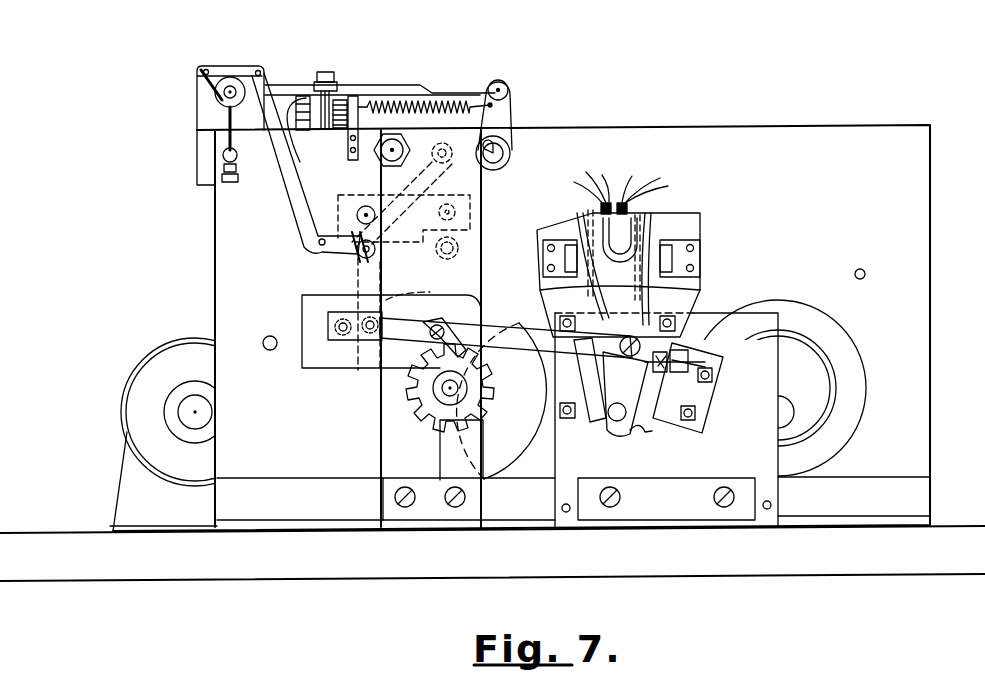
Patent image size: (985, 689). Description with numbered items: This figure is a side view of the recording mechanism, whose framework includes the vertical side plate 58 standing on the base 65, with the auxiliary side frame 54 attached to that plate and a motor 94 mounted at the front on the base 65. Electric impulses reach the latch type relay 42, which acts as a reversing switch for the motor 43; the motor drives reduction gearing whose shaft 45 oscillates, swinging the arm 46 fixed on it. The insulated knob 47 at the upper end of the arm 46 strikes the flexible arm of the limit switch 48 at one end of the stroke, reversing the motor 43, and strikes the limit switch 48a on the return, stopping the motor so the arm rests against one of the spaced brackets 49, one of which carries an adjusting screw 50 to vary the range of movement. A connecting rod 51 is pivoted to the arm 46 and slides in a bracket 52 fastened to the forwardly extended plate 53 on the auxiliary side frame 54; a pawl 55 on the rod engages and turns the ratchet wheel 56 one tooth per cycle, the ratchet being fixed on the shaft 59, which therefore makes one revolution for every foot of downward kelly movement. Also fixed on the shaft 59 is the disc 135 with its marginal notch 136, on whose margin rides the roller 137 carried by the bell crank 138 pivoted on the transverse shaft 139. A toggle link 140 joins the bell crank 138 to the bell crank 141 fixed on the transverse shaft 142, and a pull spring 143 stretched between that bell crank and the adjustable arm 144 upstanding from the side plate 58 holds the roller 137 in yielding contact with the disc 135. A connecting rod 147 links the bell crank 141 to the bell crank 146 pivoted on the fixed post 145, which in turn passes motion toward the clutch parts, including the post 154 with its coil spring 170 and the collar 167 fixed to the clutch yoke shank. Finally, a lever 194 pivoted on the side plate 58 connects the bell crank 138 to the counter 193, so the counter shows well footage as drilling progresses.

The relay 42 is at (650, 195).
The motor 43 is at (805, 430).
The shaft 45 is at (614, 420).
The arm 46 is at (648, 434).
The knob 47 is at (632, 296).
The limit switch 48 is at (700, 283).
The limit switch 48a is at (548, 292).
The brackets 49 is at (712, 394).
The adjusting screw 50 is at (693, 355).
The connecting rod 51 is at (506, 340).
The bracket 52 is at (336, 345).
The forwardly extended plate 53 is at (308, 306).
The auxiliary side frame 54 is at (483, 204).
The pawl 55 is at (472, 306).
The ratchet wheel 56 is at (485, 392).
The vertical side plate 58 is at (216, 228).
The shaft 59 is at (448, 402).
The base 65 is at (961, 531).
The motor 94 is at (197, 350).
The disc 135 is at (362, 414).
The marginal notch 136 is at (488, 296).
The roller 137 is at (382, 300).
The bell crank 138 is at (360, 272).
The transverse shaft 139 is at (460, 248).
The toggle link 140 is at (383, 176).
The bell crank 141 is at (512, 100).
The transverse shaft 142 is at (512, 156).
The pull spring 143 is at (432, 94).
The adjustable arm 144 is at (380, 84).
The fixed post 145 is at (320, 92).
The bell crank 146 is at (300, 95).
The connecting rod 147 is at (478, 80).
The post 154 is at (338, 128).
The collar 167 is at (355, 98).
The coil spring 170 is at (300, 163).
The counter 193 is at (216, 96).
The lever 194 is at (290, 172).